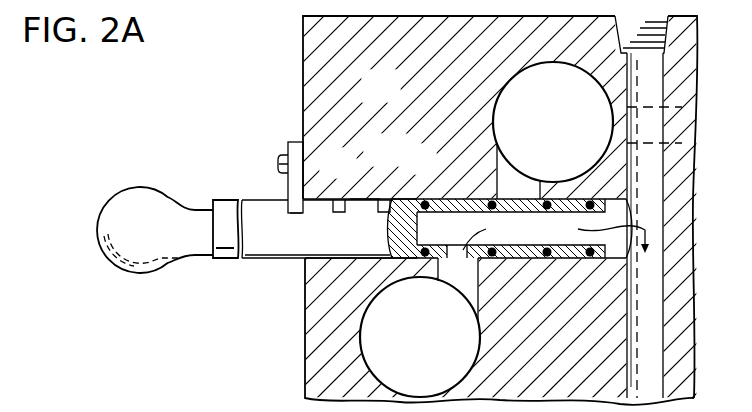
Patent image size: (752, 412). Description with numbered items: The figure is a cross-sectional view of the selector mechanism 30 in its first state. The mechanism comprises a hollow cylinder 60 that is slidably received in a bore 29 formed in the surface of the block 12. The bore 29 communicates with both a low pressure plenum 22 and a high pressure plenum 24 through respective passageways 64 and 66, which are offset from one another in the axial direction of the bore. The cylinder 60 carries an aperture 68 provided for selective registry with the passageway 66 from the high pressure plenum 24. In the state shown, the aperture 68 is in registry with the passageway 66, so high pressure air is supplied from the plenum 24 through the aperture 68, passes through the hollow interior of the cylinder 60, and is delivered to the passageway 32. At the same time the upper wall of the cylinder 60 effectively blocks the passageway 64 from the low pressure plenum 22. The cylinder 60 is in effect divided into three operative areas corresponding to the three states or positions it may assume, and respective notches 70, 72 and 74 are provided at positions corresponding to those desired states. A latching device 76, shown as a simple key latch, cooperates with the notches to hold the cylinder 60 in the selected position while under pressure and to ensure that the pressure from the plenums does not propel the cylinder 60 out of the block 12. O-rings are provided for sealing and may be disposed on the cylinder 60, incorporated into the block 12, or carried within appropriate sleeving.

The block 12 is at (396, 98).
The low pressure plenum 22 is at (570, 111).
The high pressure plenum 24 is at (420, 337).
The bore 29 is at (365, 199).
The selector mechanism 30 is at (247, 177).
The passageway 32 is at (654, 225).
The hollow cylinder 60 is at (350, 246).
The passageway 64 is at (518, 172).
The passageway 66 is at (465, 281).
The aperture 68 is at (453, 241).
The notch 70 is at (297, 215).
The notch 72 is at (337, 199).
The notch 74 is at (400, 199).
The latching device 76 is at (288, 190).